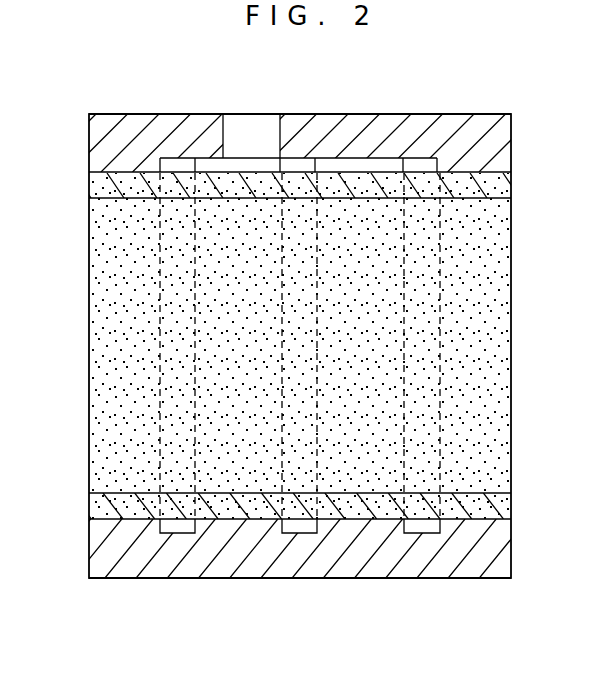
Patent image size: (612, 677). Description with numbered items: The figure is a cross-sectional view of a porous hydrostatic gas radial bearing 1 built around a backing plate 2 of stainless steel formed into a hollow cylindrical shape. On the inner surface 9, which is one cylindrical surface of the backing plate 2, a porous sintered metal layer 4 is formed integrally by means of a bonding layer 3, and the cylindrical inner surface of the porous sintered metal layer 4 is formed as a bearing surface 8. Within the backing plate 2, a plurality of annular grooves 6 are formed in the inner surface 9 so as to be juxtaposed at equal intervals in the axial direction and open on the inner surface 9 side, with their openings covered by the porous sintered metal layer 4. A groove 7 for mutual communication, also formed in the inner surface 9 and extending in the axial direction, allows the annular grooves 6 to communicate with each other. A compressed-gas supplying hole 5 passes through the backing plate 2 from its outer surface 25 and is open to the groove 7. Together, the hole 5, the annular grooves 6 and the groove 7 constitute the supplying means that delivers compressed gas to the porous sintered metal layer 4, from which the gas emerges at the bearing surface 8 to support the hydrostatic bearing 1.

The porous hydrostatic gas radial bearing 1 is at (563, 211).
The backing plate 2 is at (262, 556).
The bonding layer 3 is at (122, 514).
The porous sintered metal layer 4 is at (107, 176).
The compressed-gas supplying hole 5 is at (250, 135).
The annular grooves 6 is at (176, 166).
The groove for mutual communication 7 is at (335, 166).
The bearing surface 8 is at (108, 322).
The inner surface 9 is at (487, 502).
The outer surface 25 is at (478, 114).